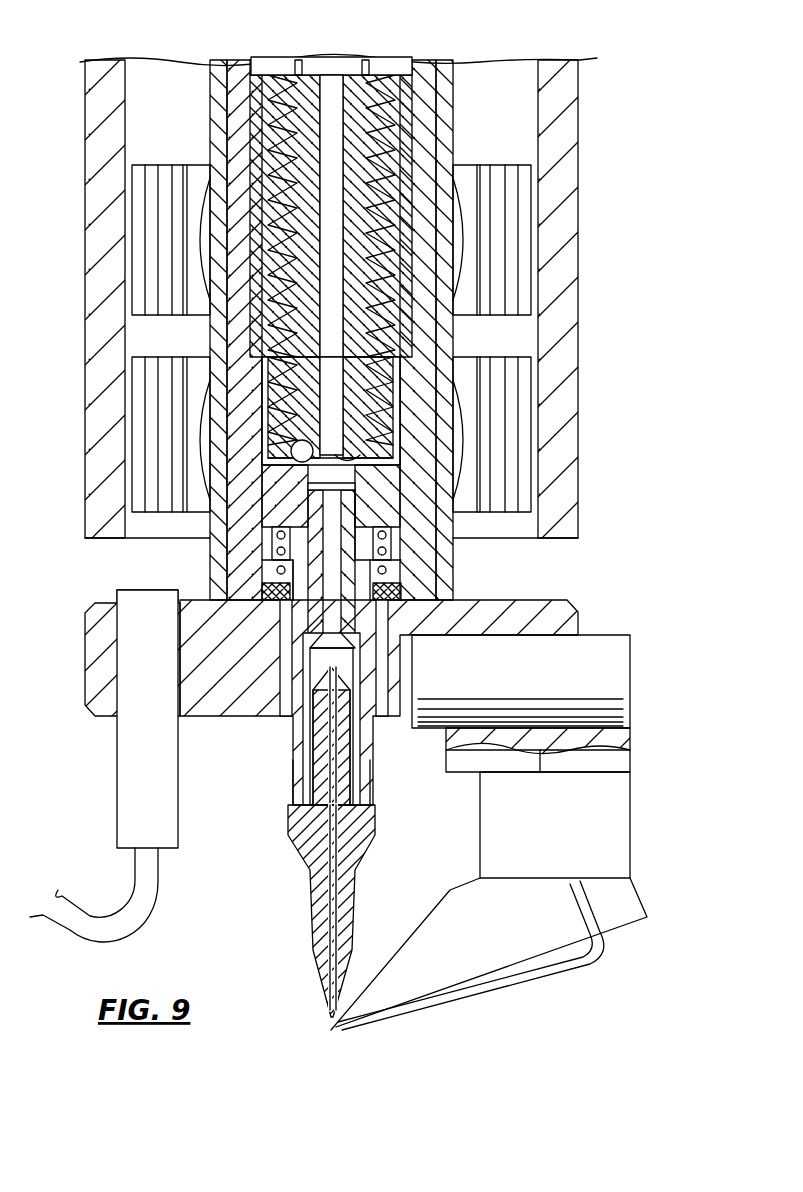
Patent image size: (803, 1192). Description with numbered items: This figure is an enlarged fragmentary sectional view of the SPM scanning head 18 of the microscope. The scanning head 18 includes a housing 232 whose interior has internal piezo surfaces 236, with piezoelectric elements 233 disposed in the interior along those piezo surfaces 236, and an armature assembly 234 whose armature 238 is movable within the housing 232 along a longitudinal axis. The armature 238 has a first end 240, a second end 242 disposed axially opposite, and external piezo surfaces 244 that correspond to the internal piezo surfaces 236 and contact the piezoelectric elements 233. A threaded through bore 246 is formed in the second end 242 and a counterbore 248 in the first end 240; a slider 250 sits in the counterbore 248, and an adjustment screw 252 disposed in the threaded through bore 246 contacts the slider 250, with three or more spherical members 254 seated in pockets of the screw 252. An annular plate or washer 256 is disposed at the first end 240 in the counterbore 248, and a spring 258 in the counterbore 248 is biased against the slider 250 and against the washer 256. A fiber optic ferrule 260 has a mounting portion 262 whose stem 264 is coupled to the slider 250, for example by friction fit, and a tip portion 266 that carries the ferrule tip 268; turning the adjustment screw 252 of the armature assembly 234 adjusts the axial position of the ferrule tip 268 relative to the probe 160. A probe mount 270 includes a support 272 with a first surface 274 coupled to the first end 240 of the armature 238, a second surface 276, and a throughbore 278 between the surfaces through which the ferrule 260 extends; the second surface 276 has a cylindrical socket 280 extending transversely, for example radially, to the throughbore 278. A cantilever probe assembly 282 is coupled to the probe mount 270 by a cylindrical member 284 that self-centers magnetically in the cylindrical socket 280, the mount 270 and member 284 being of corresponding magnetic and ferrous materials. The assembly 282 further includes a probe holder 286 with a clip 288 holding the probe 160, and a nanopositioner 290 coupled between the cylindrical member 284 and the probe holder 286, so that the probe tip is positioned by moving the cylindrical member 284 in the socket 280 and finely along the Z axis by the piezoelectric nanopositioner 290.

The SPM scanning head 18 is at (70, 963).
The probe 160 is at (316, 1034).
The housing 232 is at (567, 212).
The piezoelectric elements 233 is at (145, 372).
The armature assembly 234 is at (616, 82).
The internal piezo surfaces 236 is at (128, 116).
The armature 238 is at (247, 70).
The first end 240 is at (228, 610).
The second end 242 is at (418, 62).
The external piezo surfaces 244 is at (212, 142).
The threaded through bore 246 is at (386, 134).
The counterbore 248 is at (403, 373).
The slider 250 is at (392, 484).
The adjustment screw 252 is at (386, 68).
The spherical members 254 is at (296, 460).
The washer 256 is at (398, 597).
The spring 258 is at (283, 592).
The fiber optic ferrule 260 is at (392, 553).
The mounting portion 262 is at (290, 754).
The stem 264 is at (338, 463).
The tip portion 266 is at (280, 888).
The ferrule tip 268 is at (330, 1019).
The probe mount 270 is at (80, 652).
The support 272 is at (570, 613).
The first surface 274 is at (190, 601).
The second surface 276 is at (386, 708).
The throughbore 278 is at (284, 676).
The cylindrical socket 280 is at (412, 636).
The cantilever probe assembly 282 is at (626, 749).
The cylindrical member 284 is at (610, 670).
The probe holder 286 is at (648, 891).
The clip 288 is at (596, 949).
The nanopositioner 290 is at (610, 812).